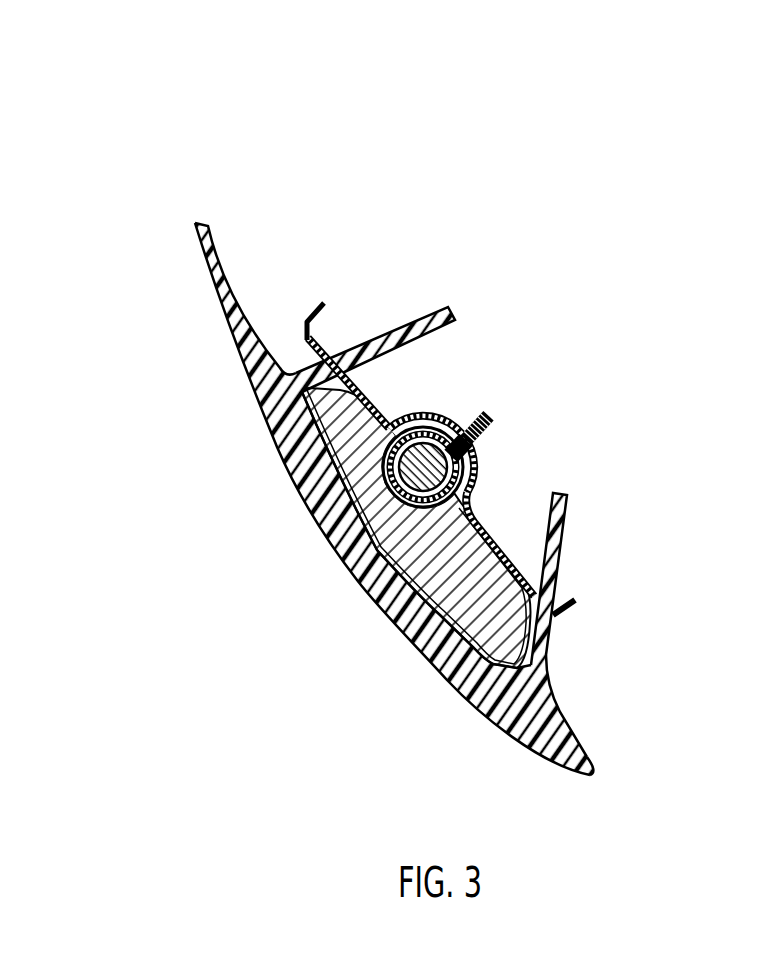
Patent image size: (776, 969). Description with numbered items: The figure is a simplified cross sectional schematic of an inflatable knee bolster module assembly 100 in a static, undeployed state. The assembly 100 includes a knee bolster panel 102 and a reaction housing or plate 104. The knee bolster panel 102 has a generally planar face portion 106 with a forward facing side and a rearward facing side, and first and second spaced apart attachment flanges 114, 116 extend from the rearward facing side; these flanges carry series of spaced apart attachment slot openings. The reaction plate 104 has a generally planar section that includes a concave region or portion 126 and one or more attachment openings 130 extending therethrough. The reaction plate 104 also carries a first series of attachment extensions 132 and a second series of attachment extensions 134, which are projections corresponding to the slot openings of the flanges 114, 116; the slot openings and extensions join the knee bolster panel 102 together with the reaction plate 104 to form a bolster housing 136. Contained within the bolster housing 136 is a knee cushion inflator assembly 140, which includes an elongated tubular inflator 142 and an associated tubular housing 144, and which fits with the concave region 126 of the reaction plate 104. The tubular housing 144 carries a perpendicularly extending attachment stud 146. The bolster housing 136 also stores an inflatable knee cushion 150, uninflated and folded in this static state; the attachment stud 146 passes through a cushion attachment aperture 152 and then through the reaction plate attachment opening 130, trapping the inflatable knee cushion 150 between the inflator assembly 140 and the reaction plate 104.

The inflatable knee bolster module assembly 100 is at (459, 404).
The knee bolster panel 102 is at (298, 483).
The reaction housing or plate 104 is at (515, 448).
The generally planar face portion 106 is at (356, 578).
The first attachment flange 114 is at (362, 345).
The second attachment flange 116 is at (561, 547).
The concave region or portion 126 is at (488, 446).
The attachment openings 130 is at (483, 443).
The first series of attachment extensions 132 is at (306, 318).
The second series of attachment extensions 134 is at (567, 610).
The bolster housing 136 is at (597, 665).
The knee cushion inflator assembly 140 is at (364, 523).
The elongated tubular inflator 142 is at (402, 480).
The tubular housing 144 is at (402, 412).
The attachment stud 146 is at (549, 356).
The inflatable knee cushion 150 is at (276, 447).
The attachment aperture 152 is at (484, 480).